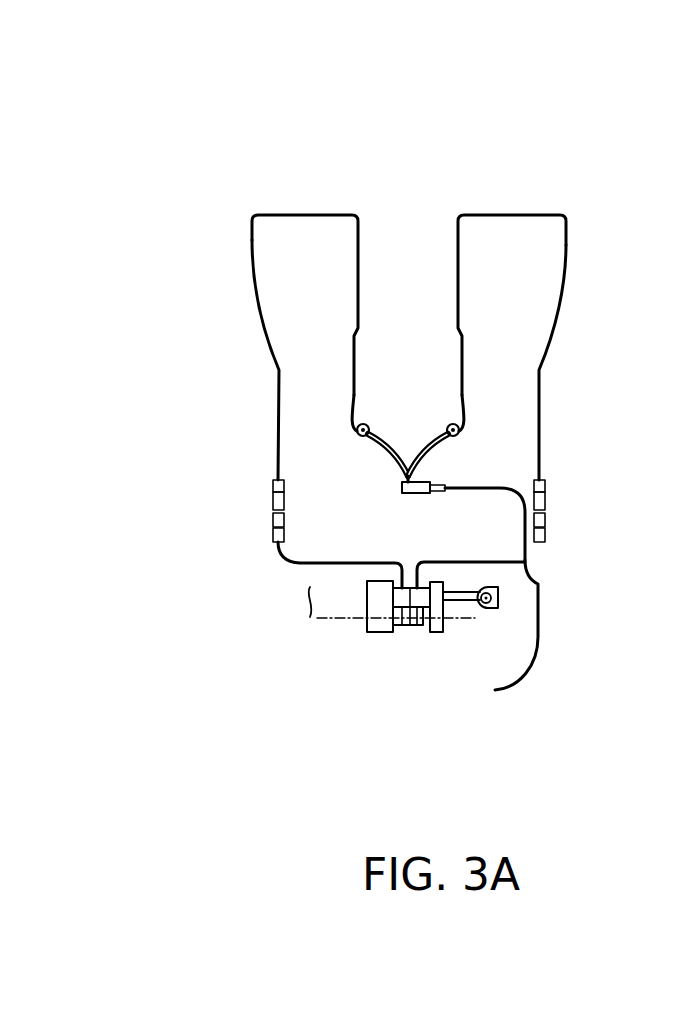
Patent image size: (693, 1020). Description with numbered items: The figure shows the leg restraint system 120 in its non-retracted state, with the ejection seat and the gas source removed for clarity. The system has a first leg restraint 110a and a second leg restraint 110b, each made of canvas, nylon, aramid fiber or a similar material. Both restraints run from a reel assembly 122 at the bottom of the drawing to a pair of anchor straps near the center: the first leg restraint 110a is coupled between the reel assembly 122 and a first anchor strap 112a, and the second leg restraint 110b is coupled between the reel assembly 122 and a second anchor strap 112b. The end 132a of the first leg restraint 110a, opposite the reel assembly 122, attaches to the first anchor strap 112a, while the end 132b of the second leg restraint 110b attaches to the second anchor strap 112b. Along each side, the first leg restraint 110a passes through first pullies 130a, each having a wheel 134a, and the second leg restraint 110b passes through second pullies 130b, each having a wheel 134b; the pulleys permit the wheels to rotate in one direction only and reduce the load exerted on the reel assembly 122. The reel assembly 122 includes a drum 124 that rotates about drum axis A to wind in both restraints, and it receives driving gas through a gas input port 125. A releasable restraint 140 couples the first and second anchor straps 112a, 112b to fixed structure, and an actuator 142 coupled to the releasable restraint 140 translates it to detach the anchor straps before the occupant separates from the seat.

The leg restraint system 120 is at (203, 146).
The first leg restraint 110a is at (566, 257).
The second leg restraint 110b is at (250, 230).
The first anchor strap 112a is at (437, 420).
The second anchor strap 112b is at (378, 420).
The end of first leg restraint 132a is at (470, 442).
The end of second leg restraint 132b is at (352, 440).
The first pullies 130a is at (574, 497).
The second pullies 130b is at (250, 480).
The wheel 134a is at (545, 485).
The wheel 134b is at (273, 501).
The releasable restraint 140 is at (446, 495).
The actuator 142 is at (532, 663).
The reel assembly 122 is at (356, 634).
The drum 124 is at (410, 622).
The gas input port 125 is at (487, 610).